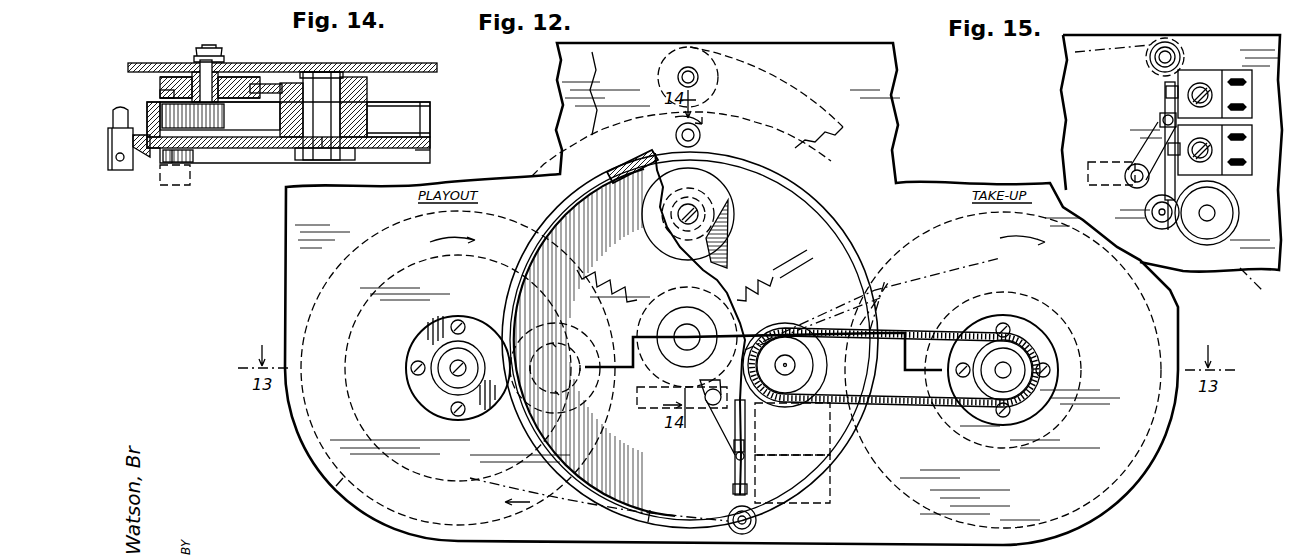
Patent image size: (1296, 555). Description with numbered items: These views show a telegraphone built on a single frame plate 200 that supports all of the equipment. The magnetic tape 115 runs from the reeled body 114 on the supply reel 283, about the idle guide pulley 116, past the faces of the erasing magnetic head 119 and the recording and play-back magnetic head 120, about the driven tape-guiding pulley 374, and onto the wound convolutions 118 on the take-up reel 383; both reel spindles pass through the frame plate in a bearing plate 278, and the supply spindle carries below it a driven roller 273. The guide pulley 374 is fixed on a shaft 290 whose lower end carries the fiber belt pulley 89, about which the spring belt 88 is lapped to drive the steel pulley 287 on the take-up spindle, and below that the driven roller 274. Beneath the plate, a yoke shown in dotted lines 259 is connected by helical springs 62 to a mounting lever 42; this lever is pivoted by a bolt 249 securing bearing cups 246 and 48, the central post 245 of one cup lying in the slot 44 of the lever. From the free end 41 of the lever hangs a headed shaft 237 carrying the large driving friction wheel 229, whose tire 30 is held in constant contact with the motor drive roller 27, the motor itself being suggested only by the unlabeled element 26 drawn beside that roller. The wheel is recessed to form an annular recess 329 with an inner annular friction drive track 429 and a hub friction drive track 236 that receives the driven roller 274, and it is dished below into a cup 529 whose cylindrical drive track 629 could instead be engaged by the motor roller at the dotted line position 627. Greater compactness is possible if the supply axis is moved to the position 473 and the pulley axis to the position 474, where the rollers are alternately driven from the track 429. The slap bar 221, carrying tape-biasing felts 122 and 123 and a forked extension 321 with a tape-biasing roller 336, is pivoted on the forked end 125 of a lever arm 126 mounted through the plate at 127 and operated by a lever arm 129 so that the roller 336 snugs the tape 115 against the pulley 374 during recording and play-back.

In FIG. 14, the frame plate 200 is at (418, 63).
In FIG. 12, the frame plate 200 is at (290, 230).
In FIG. 15, the frame plate 200 is at (1258, 44).
In FIG. 14, the bolt 249 is at (212, 45).
In FIG. 12, the bolt 249 is at (700, 214).
In FIG. 14, the bearing cup 246 is at (163, 76).
In FIG. 14, the central post 245 is at (241, 76).
In FIG. 12, the central post 245 is at (733, 195).
In FIG. 14, the mounting lever 42 is at (279, 83).
In FIG. 12, the mounting lever 42 is at (728, 260).
In FIG. 14, the bearing cup 48 is at (160, 92).
In FIG. 14, the slot 44 is at (228, 100).
In FIG. 12, the slot 44 is at (715, 228).
In FIG. 14, the inner annular friction drive track 429 is at (193, 116).
In FIG. 14, the free end of mounting lever 41 is at (345, 90).
In FIG. 14, the hub friction drive track 236 is at (372, 122).
In FIG. 14, the driving friction wheel 229 is at (433, 129).
In FIG. 12, the driving friction wheel 229 is at (605, 173).
In FIG. 14, the cup 529 is at (418, 155).
In FIG. 12, the cup 529 is at (575, 385).
In FIG. 14, the block 26 is at (121, 113).
In FIG. 14, the motor drive roller 27 is at (122, 170).
In FIG. 12, the motor drive roller 27 is at (702, 133).
In FIG. 14, the tire 30 is at (142, 160).
In FIG. 12, the tire 30 is at (647, 163).
In FIG. 14, the cylindrical drive track 629 is at (173, 165).
In FIG. 12, the cylindrical drive track 629 is at (648, 524).
In FIG. 14, the dotted line position 627 is at (192, 182).
In FIG. 14, the annular recess 329 is at (245, 150).
In FIG. 14, the headed shaft 237 is at (320, 137).
In FIG. 12, the headed shaft 237 is at (657, 323).
In FIG. 12, the yoke 259 is at (815, 84).
In FIG. 12, the helical springs 62 is at (618, 290).
In FIG. 12, the tape-biasing roller 336 is at (748, 299).
In FIG. 15, the tape-biasing roller 336 is at (1170, 233).
In FIG. 12, the driven roller 274 is at (792, 320).
In FIG. 12, the shifted position of driven roller axis 474 is at (868, 305).
In FIG. 12, the reeled body 114 is at (398, 468).
In FIG. 12, the supply reel 283 is at (343, 478).
In FIG. 12, the tape 115 is at (496, 498).
In FIG. 15, the tape 115 is at (1130, 35).
In FIG. 12, the bearing plate 278 is at (410, 352).
In FIG. 12, the driven roller 273 is at (445, 392).
In FIG. 12, the shifted position of supply reel axis 473 is at (560, 416).
In FIG. 12, the lever arm 129 is at (640, 430).
In FIG. 15, the lever arm 129 is at (1097, 162).
In FIG. 12, the lever arm 126 is at (712, 408).
In FIG. 15, the lever arm 126 is at (1148, 156).
In FIG. 12, the tape-biasing felt 123 is at (735, 456).
In FIG. 15, the tape-biasing felt 123 is at (1178, 152).
In FIG. 12, the slap bar 221 is at (735, 480).
In FIG. 15, the slap bar 221 is at (1170, 108).
In FIG. 12, the tape-biasing felt 122 is at (733, 490).
In FIG. 15, the tape-biasing felt 122 is at (1166, 92).
In FIG. 12, the idle guide pulley 116 is at (758, 520).
In FIG. 15, the idle guide pulley 116 is at (1180, 54).
In FIG. 12, the erasing magnetic head 119 is at (832, 503).
In FIG. 15, the erasing magnetic head 119 is at (1213, 76).
In FIG. 12, the recording and play-back magnetic head 120 is at (833, 455).
In FIG. 15, the recording and play-back magnetic head 120 is at (1240, 160).
In FIG. 12, the forked extension 321 is at (765, 405).
In FIG. 15, the forked extension 321 is at (1150, 226).
In FIG. 12, the belt pulley 89 is at (818, 402).
In FIG. 12, the spring belt 88 is at (903, 406).
In FIG. 12, the take-up reel 383 is at (1143, 463).
In FIG. 12, the wound convolutions 118 is at (1062, 420).
In FIG. 12, the pulley 287 is at (1012, 350).
In FIG. 15, the forked end 125 is at (1163, 120).
In FIG. 15, the pivot 127 is at (1138, 188).
In FIG. 15, the driven tape-guiding pulley 374 is at (1239, 212).
In FIG. 15, the shaft 290 is at (1243, 230).